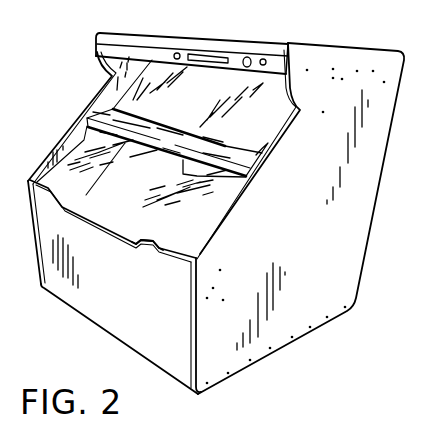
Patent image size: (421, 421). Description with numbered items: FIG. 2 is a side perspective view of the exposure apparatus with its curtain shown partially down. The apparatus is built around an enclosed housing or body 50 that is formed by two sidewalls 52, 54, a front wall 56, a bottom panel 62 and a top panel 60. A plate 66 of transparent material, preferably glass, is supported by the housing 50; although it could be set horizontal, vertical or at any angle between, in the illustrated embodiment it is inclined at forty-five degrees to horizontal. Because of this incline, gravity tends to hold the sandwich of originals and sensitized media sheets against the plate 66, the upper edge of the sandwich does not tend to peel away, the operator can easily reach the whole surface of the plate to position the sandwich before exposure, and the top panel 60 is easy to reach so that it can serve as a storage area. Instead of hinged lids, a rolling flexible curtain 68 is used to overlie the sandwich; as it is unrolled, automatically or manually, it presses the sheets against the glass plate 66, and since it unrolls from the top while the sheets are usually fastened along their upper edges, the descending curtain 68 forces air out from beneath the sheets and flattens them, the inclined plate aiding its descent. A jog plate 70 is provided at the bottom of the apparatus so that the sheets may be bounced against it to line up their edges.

The housing 50 is at (213, 202).
The sidewall 52 is at (290, 245).
The sidewall 54 is at (92, 97).
The front wall 56 is at (138, 325).
The top panel 60 is at (224, 52).
The bottom panel 62 is at (104, 326).
The plate 66 is at (80, 152).
The rolling flexible curtain 68 is at (263, 123).
The jog plate 70 is at (107, 228).